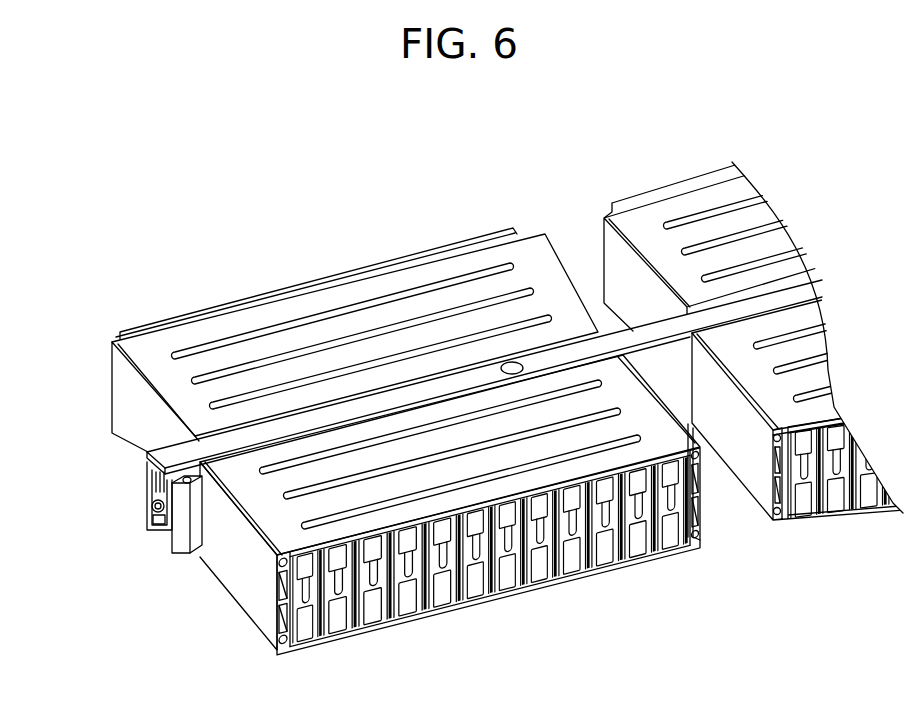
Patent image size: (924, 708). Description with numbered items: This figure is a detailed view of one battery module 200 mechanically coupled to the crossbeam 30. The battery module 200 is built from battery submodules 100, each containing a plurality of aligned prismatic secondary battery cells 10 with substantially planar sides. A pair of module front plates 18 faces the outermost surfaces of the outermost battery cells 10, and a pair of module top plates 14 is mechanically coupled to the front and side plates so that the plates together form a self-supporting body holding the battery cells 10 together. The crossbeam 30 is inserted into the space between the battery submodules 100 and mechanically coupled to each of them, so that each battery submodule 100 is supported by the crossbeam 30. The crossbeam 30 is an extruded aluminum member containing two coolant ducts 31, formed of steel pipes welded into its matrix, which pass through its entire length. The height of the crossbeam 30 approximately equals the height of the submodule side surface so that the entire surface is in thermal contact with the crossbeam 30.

The battery module 200 is at (315, 257).
The battery submodule 100 is at (96, 402).
The module top plate 14 is at (520, 278).
The module front plate 18 is at (123, 372).
The crossbeam 30 is at (640, 335).
The coolant duct 31 is at (150, 495).
The secondary battery cell 10 is at (494, 578).